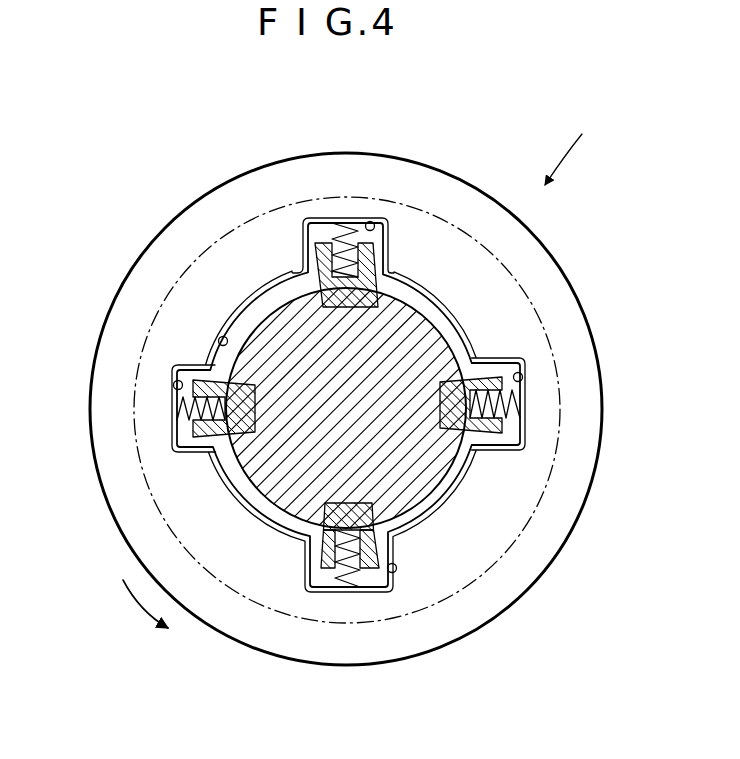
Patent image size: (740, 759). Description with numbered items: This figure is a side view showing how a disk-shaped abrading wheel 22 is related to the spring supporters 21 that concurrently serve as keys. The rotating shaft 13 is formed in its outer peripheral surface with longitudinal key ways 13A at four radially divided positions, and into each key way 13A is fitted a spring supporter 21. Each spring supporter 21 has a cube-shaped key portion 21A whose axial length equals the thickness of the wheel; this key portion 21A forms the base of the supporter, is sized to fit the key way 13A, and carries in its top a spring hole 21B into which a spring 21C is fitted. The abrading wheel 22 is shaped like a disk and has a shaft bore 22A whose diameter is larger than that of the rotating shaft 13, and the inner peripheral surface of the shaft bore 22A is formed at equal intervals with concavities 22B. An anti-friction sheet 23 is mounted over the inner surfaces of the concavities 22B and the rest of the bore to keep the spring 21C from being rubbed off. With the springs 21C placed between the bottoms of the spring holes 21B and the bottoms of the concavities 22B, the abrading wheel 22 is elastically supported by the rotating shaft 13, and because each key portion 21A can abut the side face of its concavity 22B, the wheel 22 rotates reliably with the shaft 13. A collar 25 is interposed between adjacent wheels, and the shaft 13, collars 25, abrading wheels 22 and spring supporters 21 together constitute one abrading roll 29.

The rotating shaft 13 is at (401, 452).
The key way 13A is at (408, 356).
The spring supporter 21 is at (346, 424).
The key portion 21A is at (272, 610).
The spring hole 21B is at (333, 612).
The spring 21C is at (361, 625).
The abrading wheel 22 is at (346, 437).
The shaft bore 22A is at (218, 345).
The concavity 22B is at (62, 400).
The anti-friction sheet 23 is at (460, 318).
The collar 25 is at (340, 403).
The abrading roll 29 is at (575, 148).